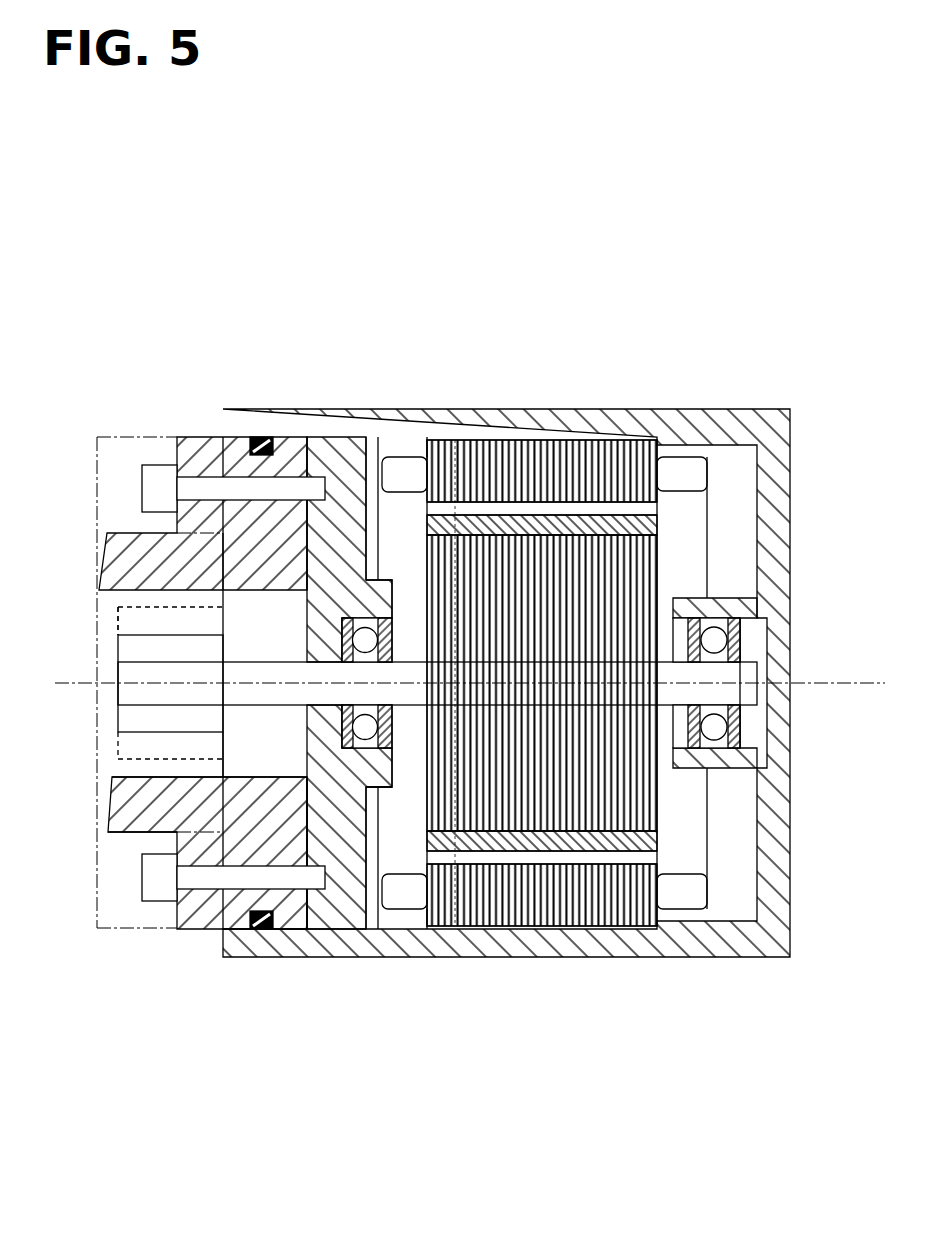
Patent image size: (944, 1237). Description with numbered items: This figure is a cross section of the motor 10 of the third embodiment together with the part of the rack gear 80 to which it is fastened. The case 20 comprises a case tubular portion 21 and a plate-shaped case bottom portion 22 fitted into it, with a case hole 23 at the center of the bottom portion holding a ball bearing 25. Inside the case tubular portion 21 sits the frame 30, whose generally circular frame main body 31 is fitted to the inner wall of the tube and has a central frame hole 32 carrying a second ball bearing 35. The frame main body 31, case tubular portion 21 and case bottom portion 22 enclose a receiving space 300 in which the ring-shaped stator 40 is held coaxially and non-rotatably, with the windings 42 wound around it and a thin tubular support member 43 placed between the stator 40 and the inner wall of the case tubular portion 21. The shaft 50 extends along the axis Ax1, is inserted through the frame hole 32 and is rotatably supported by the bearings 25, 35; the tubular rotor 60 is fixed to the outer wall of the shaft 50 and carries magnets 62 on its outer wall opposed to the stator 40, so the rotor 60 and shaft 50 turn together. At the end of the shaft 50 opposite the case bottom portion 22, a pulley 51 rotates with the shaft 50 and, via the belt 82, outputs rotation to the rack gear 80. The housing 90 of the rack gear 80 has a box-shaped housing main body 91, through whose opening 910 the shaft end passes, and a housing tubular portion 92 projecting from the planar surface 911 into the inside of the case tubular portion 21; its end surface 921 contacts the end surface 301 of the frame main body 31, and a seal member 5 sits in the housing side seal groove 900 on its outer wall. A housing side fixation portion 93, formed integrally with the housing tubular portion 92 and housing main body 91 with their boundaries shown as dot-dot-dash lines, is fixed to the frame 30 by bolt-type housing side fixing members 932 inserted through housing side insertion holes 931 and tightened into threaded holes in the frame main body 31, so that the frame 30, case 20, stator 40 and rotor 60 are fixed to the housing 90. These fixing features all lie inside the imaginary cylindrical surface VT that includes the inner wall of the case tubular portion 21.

The motor 10 is at (647, 180).
The case 20 is at (547, 642).
The case tubular portion 21 is at (650, 415).
The case bottom portion 22 is at (782, 536).
The case hole 23 is at (743, 745).
The bearing 25 is at (718, 735).
The frame 30 is at (323, 445).
The frame main body 31 is at (350, 445).
The frame hole 32 is at (380, 770).
The bearing 35 is at (378, 781).
The receiving space 300 is at (399, 513).
The end surface 301 is at (305, 800).
The stator 40 is at (543, 443).
The windings 42 is at (686, 462).
The support member 43 is at (496, 443).
The shaft 50 is at (138, 677).
The pulley 51 is at (137, 645).
The rotor 60 is at (548, 856).
The magnets 62 is at (616, 856).
The rack gear 80 is at (112, 521).
The belt 82 is at (115, 612).
The housing 90 is at (250, 684).
The housing main body 91 is at (128, 843).
The housing tubular portion 92 is at (287, 443).
The housing side fixation portion 93 is at (203, 445).
The housing side seal groove 900 is at (263, 930).
The opening 910 is at (223, 748).
The surface 911 is at (225, 562).
The end surface 921 is at (307, 825).
The housing side insertion holes 931 is at (193, 497).
The housing side fixing members 932 is at (152, 466).
The seal member 5 is at (256, 932).
The imaginary cylindrical surface VT is at (118, 436).
The axis Ax1 is at (72, 686).